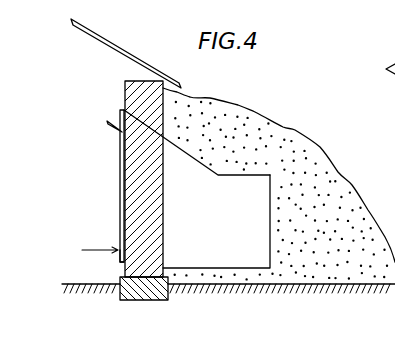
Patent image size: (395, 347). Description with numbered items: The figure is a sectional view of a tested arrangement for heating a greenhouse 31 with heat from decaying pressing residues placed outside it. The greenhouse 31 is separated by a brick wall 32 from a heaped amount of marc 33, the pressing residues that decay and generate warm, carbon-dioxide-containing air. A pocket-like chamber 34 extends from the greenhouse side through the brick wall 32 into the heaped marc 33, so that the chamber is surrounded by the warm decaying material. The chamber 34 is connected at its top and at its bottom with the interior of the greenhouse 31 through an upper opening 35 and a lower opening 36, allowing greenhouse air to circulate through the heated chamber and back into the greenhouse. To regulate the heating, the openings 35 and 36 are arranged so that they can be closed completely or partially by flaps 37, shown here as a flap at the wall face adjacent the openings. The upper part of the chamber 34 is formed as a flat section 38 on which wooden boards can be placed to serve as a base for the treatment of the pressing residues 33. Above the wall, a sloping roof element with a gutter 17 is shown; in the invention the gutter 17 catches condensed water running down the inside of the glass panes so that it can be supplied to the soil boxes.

The gutter 17 is at (125, 94).
The greenhouse 31 is at (79, 196).
The brick wall 32 is at (145, 209).
The marc 33 is at (312, 167).
The pocket-like chamber 34 is at (221, 233).
The upper opening 35 is at (118, 113).
The lower opening 36 is at (120, 261).
The flap 37 is at (120, 133).
The flat section 38 is at (253, 175).